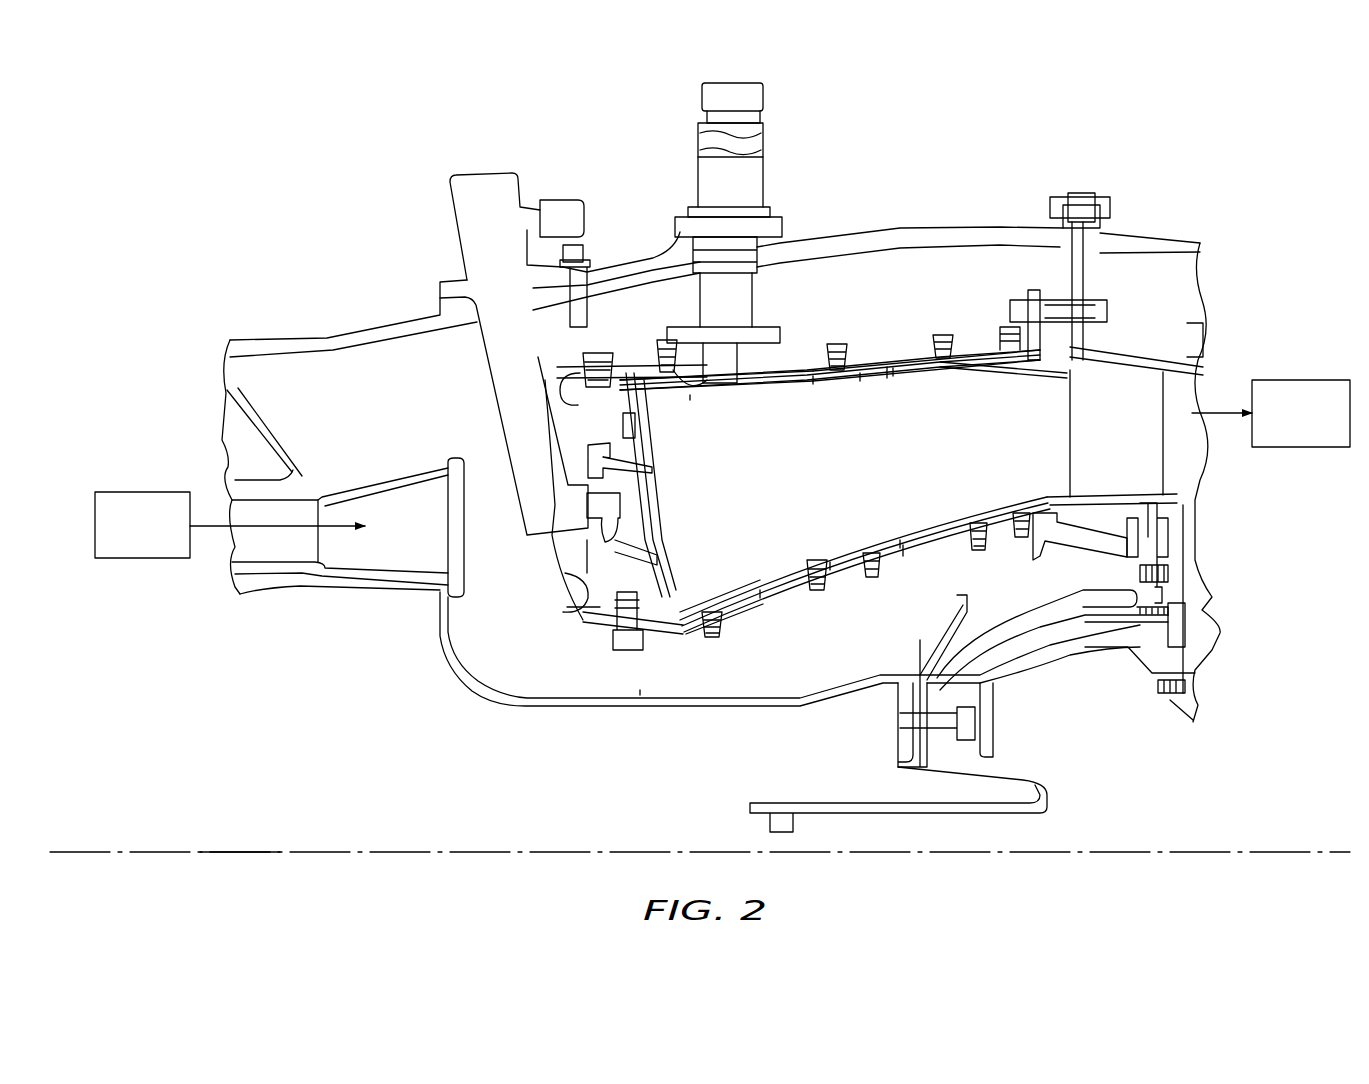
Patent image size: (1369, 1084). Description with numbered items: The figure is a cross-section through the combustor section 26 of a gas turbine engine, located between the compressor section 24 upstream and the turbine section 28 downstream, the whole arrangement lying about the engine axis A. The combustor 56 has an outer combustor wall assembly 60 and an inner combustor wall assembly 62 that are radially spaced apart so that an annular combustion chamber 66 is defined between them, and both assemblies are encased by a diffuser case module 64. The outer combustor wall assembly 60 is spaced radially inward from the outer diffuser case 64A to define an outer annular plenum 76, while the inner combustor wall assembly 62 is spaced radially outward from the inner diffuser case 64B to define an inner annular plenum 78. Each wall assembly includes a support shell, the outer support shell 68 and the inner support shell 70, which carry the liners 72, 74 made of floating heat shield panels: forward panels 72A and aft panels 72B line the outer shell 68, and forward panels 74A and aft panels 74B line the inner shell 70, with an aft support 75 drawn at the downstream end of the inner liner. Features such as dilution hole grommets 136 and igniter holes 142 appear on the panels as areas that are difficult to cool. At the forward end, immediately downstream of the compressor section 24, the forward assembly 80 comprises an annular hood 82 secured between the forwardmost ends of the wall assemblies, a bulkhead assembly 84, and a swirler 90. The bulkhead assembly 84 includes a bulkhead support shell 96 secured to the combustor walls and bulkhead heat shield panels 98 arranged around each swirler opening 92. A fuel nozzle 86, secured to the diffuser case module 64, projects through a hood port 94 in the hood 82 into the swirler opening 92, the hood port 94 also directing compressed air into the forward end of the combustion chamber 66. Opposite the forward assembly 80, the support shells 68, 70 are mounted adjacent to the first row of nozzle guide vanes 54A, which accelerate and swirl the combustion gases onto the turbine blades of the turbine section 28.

The compressor section 24 is at (156, 541).
The combustor section 26 is at (1118, 135).
The turbine section 28 is at (1314, 429).
The Nozzle Guide Vanes 54A is at (1135, 447).
The combustor 56 is at (1040, 153).
The outer combustor wall assembly 60 is at (903, 347).
The inner combustor wall assembly 62 is at (843, 588).
The diffuser case module 64 is at (893, 228).
The outer diffuser case 64A is at (975, 233).
The inner diffuser case 64B is at (750, 710).
The annular combustion chamber 66 is at (874, 492).
The outer support shell 68 is at (863, 367).
The inner support shell 70 is at (950, 540).
The outer liner 72 is at (863, 390).
The forward outer panels 72A is at (767, 392).
The aft outer panels 72B is at (940, 365).
The inner liner 74 is at (883, 523).
The forward inner panels 74A is at (770, 577).
The aft inner panels 74B is at (943, 507).
The aft liner support 75 is at (1027, 537).
The outer annular plenum 76 is at (829, 302).
The inner annular plenum 78 is at (812, 680).
The forward assembly 80 is at (573, 642).
The annular hood 82 is at (570, 598).
The bulkhead assembly 84 is at (660, 430).
The fuel nozzle 86 is at (518, 308).
The swirler 90 is at (663, 528).
The swirler opening 92 is at (662, 460).
The hood port 94 is at (560, 572).
The bulkhead support shell 96 is at (583, 613).
The bulkhead heat shield panels 98 is at (673, 560).
The dilution holes and/or associated grommets 136 is at (887, 367).
The igniter holes 142 is at (652, 365).
The engine central longitudinal axis A is at (236, 848).